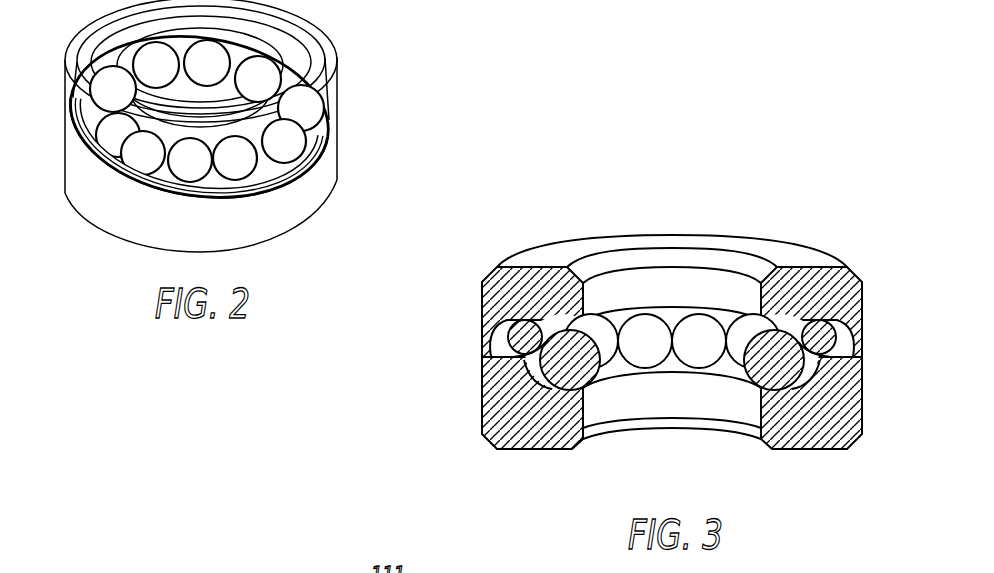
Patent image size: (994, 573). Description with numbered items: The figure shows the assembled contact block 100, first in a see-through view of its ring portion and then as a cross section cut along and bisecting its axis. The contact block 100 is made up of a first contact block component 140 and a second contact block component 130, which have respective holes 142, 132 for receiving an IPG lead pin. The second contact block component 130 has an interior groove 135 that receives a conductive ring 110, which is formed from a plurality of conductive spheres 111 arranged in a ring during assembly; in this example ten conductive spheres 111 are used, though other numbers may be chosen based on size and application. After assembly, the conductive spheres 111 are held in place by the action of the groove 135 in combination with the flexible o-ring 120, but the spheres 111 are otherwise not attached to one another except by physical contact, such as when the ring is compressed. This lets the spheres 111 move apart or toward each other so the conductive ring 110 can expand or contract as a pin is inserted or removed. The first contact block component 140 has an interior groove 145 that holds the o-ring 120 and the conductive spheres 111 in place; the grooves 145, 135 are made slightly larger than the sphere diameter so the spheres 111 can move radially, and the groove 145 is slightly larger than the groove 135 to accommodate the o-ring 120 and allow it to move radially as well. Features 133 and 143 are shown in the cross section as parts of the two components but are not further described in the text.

In FIG. 2, the contact block 100 is at (236, 142).
In FIG. 3, the contact block 100 is at (655, 328).
In FIG. 2, the conductive ring 110 is at (246, 104).
In FIG. 3, the conductive ring 110 is at (672, 352).
In FIG. 3, the conductive spheres 111 is at (695, 330).
In FIG. 2, the flexible o-ring 120 is at (288, 78).
In FIG. 3, the flexible o-ring 120 is at (655, 337).
In FIG. 2, the second contact block component 130 is at (112, 208).
In FIG. 3, the second contact block component 130 is at (669, 429).
In FIG. 3, the hole 132 is at (715, 402).
In FIG. 3, the inner ring chamfer 133 is at (603, 428).
In FIG. 3, the interior groove 135 is at (830, 380).
In FIG. 2, the first contact block component 140 is at (78, 58).
In FIG. 3, the first contact block component 140 is at (642, 263).
In FIG. 3, the hole 142 is at (656, 283).
In FIG. 3, the outer ring top face 143 is at (757, 262).
In FIG. 3, the interior groove 145 is at (621, 354).